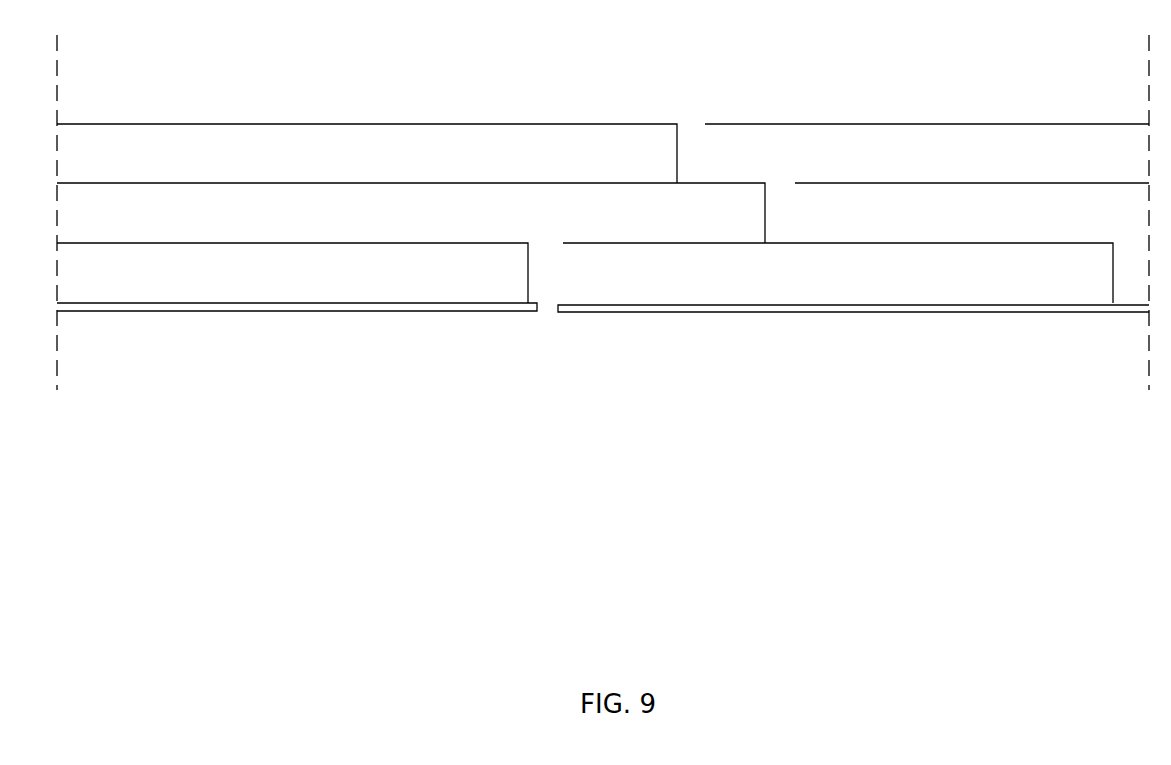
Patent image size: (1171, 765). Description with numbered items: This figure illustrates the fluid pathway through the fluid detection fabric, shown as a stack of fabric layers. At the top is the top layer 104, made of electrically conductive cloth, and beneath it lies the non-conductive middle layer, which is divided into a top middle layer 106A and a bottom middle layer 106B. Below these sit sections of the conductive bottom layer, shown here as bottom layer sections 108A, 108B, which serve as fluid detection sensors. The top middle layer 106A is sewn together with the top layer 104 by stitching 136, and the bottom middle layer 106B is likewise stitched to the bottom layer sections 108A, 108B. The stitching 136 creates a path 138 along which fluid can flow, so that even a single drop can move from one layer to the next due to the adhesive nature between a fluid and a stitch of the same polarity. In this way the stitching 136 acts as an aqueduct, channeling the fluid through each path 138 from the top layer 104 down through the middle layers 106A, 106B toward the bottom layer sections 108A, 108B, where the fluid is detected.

The top layer 104 is at (373, 123).
The top middle layer 106A is at (503, 182).
The bottom middle layer 106B is at (486, 242).
The section of the bottom layer 108A is at (463, 314).
The section of the bottom layer 108B is at (611, 316).
The stitching 136 is at (676, 155).
The path 138 is at (694, 123).